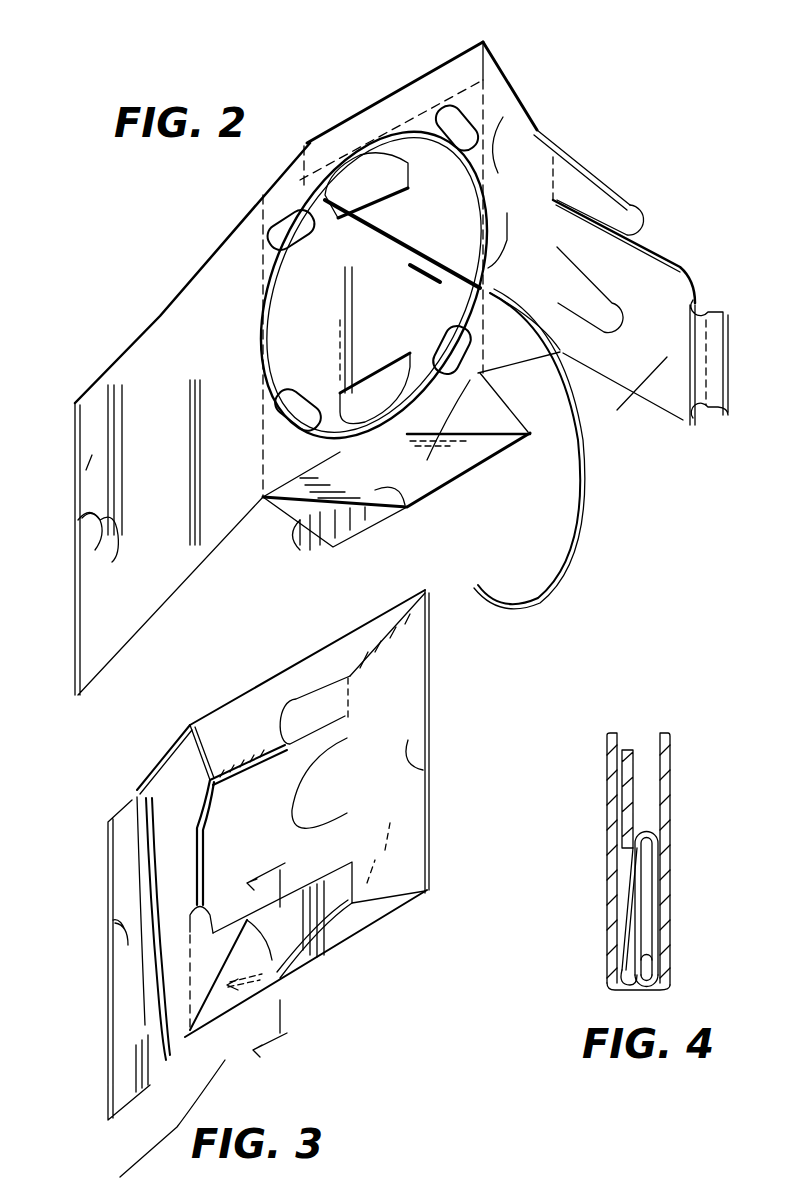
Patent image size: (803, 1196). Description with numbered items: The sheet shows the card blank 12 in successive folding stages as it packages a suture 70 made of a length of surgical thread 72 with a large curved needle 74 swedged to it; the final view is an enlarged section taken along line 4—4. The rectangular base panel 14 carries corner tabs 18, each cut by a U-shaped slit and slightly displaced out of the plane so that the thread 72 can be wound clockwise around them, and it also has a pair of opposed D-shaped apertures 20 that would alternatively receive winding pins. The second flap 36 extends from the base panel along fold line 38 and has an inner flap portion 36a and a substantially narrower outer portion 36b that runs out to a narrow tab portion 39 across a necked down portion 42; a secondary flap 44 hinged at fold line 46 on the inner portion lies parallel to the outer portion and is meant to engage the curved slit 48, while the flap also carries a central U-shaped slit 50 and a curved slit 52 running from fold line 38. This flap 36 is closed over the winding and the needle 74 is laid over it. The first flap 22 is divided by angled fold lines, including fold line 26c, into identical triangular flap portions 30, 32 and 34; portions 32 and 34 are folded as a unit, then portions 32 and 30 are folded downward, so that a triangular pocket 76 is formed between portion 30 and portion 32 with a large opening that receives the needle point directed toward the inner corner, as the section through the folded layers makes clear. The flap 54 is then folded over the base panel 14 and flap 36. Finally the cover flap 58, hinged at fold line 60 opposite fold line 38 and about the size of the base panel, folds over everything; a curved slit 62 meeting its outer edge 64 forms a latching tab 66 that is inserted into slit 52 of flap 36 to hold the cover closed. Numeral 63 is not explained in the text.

In FIG. 2, the blank 12 is at (490, 82).
In FIG. 2, the base panel 14 is at (438, 246).
In FIG. 4, the base panel 14 is at (670, 790).
In FIG. 2, the tab 18 is at (273, 207).
In FIG. 2, the D-shaped aperture 20 is at (383, 183).
In FIG. 2, the first flap 22 is at (467, 453).
In FIG. 3, the first flap 22 is at (313, 868).
In FIG. 4, the first flap 22 is at (662, 905).
In FIG. 2, the fold line 26c is at (280, 513).
In FIG. 4, the flap portion 30 is at (645, 942).
In FIG. 2, the flap portion 32 is at (350, 520).
In FIG. 3, the flap portion 32 is at (228, 1000).
In FIG. 4, the flap portion 32 is at (630, 875).
In FIG. 2, the flap portion 34 is at (397, 497).
In FIG. 4, the flap portion 34 is at (658, 858).
In FIG. 2, the second flap 36 is at (728, 258).
In FIG. 3, the second flap 36 is at (233, 823).
In FIG. 4, the second flap 36 is at (625, 785).
In FIG. 2, the inner flap portion 36a is at (563, 353).
In FIG. 2, the outer portion 36b is at (668, 392).
In FIG. 2, the fold line 38 is at (490, 323).
In FIG. 2, the narrow tab portion 39 is at (720, 390).
In FIG. 2, the necked down portion 42 is at (700, 307).
In FIG. 2, the secondary flap 44 is at (603, 193).
In FIG. 3, the secondary flap 44 is at (322, 700).
In FIG. 2, the fold line 46 is at (567, 162).
In FIG. 2, the curved slit 48 is at (505, 133).
In FIG. 3, the curved slit 48 is at (413, 630).
In FIG. 2, the central U-shaped slit 50 is at (610, 273).
In FIG. 3, the central U-shaped slit 50 is at (337, 775).
In FIG. 2, the curved slit 52 is at (507, 230).
In FIG. 3, the curved slit 52 is at (423, 752).
In FIG. 2, the flap 54 is at (428, 97).
In FIG. 3, the flap 54 is at (258, 700).
In FIG. 2, the cover flap 58 is at (217, 277).
In FIG. 3, the cover flap 58 is at (122, 832).
In FIG. 4, the cover flap 58 is at (610, 905).
In FIG. 2, the fold line 60 is at (263, 270).
In FIG. 2, the curved slit 62 is at (112, 562).
In FIG. 3, the curved slit 62 is at (115, 923).
In FIG. 3, the bend 63 is at (192, 870).
In FIG. 2, the edge 64 is at (88, 470).
In FIG. 3, the edge 64 is at (108, 1023).
In FIG. 2, the latching tab 66 is at (88, 520).
In FIG. 3, the latching tab 66 is at (122, 950).
In FIG. 2, the suture 70 is at (420, 263).
In FIG. 2, the surgical thread 72 is at (387, 240).
In FIG. 3, the surgical thread 72 is at (187, 777).
In FIG. 2, the curved needle 74 is at (588, 528).
In FIG. 3, the curved needle 74 is at (330, 930).
In FIG. 4, the curved needle 74 is at (607, 982).
In FIG. 3, the pocket 76 is at (253, 953).
In FIG. 3, the section line 4 is at (203, 1020).